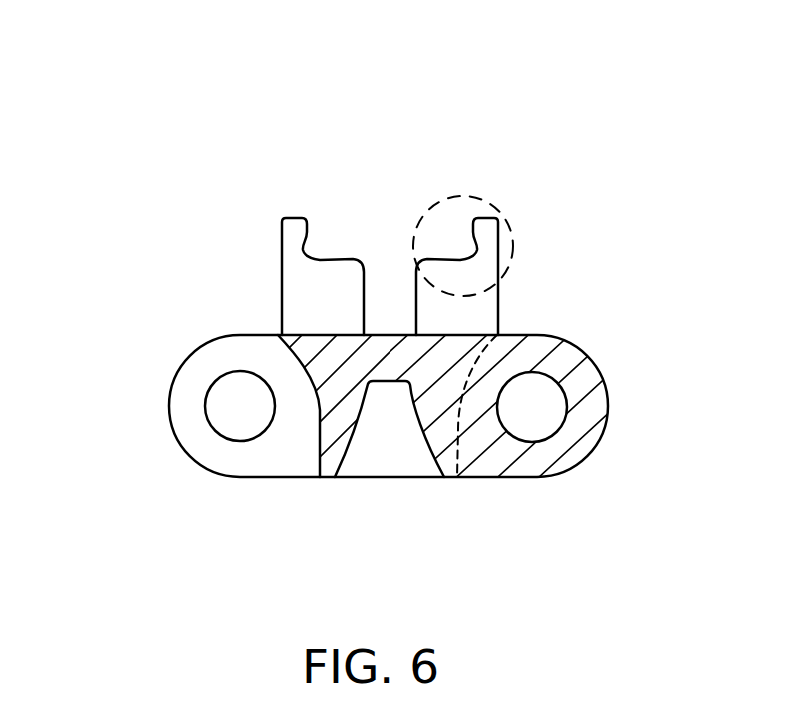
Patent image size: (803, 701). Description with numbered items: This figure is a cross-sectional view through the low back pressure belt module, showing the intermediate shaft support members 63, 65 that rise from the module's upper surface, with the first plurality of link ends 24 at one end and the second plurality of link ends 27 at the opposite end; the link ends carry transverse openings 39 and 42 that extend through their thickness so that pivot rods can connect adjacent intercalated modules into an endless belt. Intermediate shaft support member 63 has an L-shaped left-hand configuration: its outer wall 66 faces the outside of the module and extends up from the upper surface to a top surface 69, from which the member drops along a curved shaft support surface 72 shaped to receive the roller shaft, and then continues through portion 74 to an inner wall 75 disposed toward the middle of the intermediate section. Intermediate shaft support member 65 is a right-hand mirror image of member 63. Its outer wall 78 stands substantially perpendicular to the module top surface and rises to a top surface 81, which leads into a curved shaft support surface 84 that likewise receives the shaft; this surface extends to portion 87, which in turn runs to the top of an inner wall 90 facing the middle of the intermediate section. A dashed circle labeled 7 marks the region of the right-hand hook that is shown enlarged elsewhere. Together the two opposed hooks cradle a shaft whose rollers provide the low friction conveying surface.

The detail area of hook 7 is at (483, 215).
The first plurality of link ends 24 is at (221, 343).
The second plurality of link ends 27 is at (598, 368).
The transverse opening 39 is at (213, 428).
The transverse opening 42 is at (562, 404).
The intermediate shaft support member 63 is at (236, 235).
The intermediate shaft support member 65 is at (545, 250).
The outer wall 66 is at (282, 283).
The top surface 69 is at (295, 218).
The curved shaft support surface 72 is at (305, 240).
The portion 74 is at (352, 258).
The inner wall 75 is at (371, 292).
The outer wall 78 is at (500, 308).
The top surface 81 is at (490, 210).
The curved shaft support surface 84 is at (472, 250).
The portion 87 is at (433, 257).
The inner wall 90 is at (415, 304).